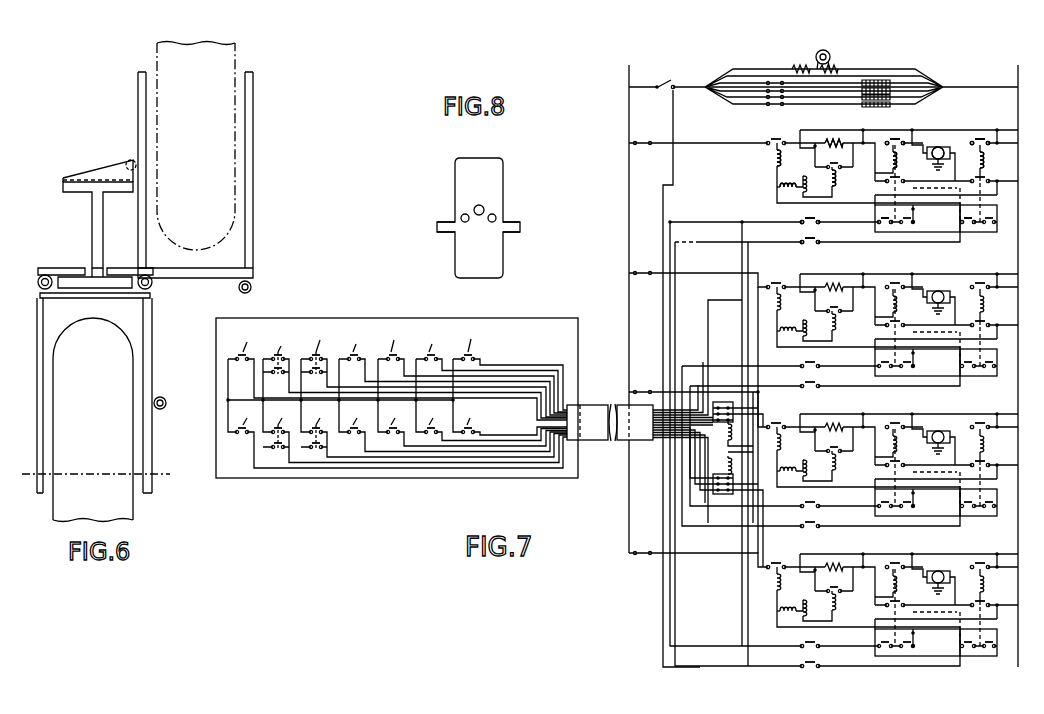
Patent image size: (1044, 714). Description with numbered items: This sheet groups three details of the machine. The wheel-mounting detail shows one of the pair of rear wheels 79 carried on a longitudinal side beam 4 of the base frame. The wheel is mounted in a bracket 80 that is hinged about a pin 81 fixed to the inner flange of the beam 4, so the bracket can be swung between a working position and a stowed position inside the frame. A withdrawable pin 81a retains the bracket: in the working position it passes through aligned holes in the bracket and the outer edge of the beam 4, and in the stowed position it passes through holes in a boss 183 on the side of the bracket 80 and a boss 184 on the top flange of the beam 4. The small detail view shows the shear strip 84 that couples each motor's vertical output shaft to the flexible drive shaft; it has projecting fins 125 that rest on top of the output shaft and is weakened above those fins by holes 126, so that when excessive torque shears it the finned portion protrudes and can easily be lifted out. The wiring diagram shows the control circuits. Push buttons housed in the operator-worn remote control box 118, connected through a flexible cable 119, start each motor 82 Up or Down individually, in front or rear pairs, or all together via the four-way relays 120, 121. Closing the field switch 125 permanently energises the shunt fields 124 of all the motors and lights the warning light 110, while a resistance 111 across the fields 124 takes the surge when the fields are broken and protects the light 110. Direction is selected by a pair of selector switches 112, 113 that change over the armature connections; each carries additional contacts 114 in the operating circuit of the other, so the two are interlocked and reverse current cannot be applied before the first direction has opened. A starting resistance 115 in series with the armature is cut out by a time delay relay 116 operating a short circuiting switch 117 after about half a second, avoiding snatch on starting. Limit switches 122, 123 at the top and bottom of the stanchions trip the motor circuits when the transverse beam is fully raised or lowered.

In FIG. 6, the side beam 4 is at (100, 222).
In FIG. 6, the rear wheel 79 is at (236, 173).
In FIG. 6, the bracket 80 is at (247, 190).
In FIG. 6, the pin 81 is at (153, 283).
In FIG. 6, the withdrawable pin 81a is at (130, 160).
In FIG. 6, the boss 183 is at (166, 400).
In FIG. 6, the boss 184 is at (103, 170).
In FIG. 8, the shear strip 84 is at (492, 179).
In FIG. 8, the projecting fins 125 is at (442, 221).
In FIG. 7, the projecting fins 125 is at (668, 77).
In FIG. 8, the holes 126 is at (468, 222).
In FIG. 7, the remote control box 118 is at (424, 470).
In FIG. 7, the flexible cable 119 is at (613, 404).
In FIG. 7, the four-way relay 120 is at (729, 402).
In FIG. 7, the four-way relay 121 is at (734, 494).
In FIG. 7, the warning light 110 is at (815, 57).
In FIG. 7, the resistance 111 is at (834, 70).
In FIG. 7, the shunt fields 124 is at (890, 83).
In FIG. 7, the starting resistance 115 is at (833, 141).
In FIG. 7, the time delay relay 116 is at (783, 185).
In FIG. 7, the short circuiting switch 117 is at (841, 173).
In FIG. 7, the selector switch 112 is at (895, 141).
In FIG. 7, the selector switch 113 is at (982, 141).
In FIG. 7, the additional contacts 114 is at (880, 222).
In FIG. 7, the motor 82 is at (941, 147).
In FIG. 7, the limit switch 122 is at (803, 220).
In FIG. 7, the limit switch 123 is at (818, 246).